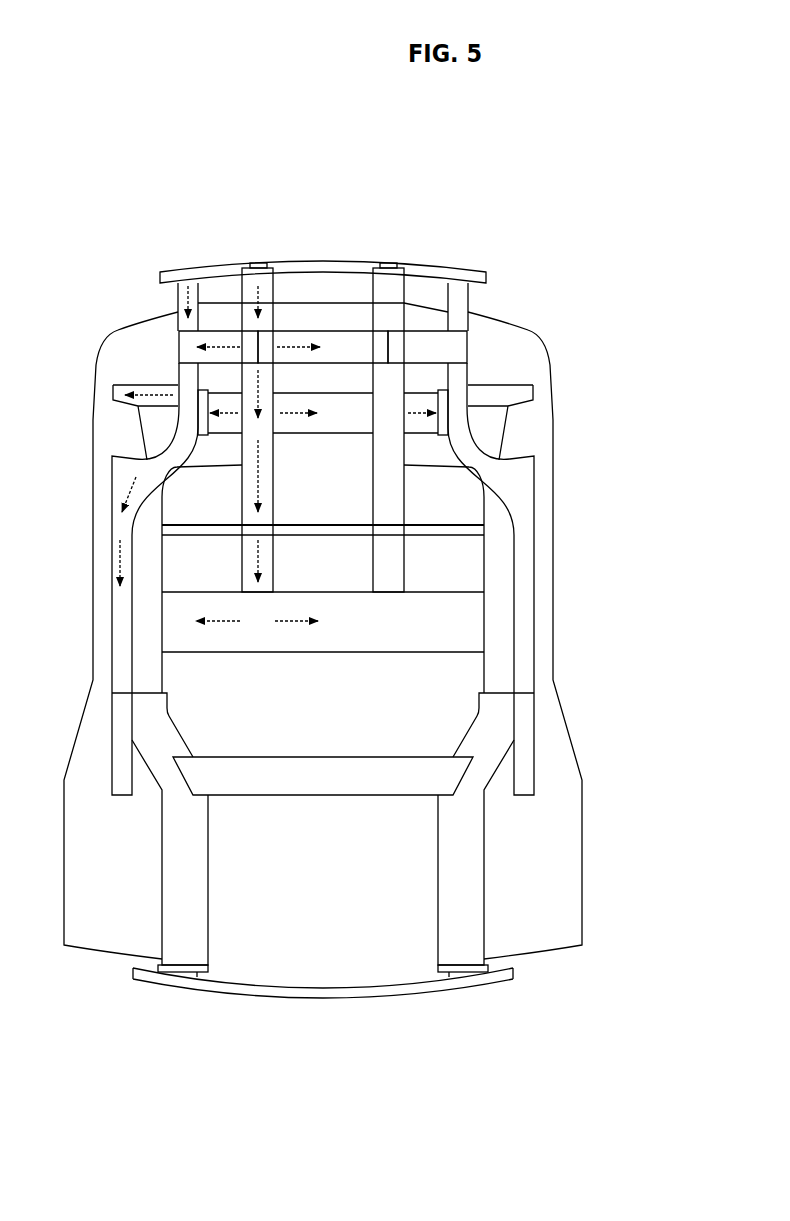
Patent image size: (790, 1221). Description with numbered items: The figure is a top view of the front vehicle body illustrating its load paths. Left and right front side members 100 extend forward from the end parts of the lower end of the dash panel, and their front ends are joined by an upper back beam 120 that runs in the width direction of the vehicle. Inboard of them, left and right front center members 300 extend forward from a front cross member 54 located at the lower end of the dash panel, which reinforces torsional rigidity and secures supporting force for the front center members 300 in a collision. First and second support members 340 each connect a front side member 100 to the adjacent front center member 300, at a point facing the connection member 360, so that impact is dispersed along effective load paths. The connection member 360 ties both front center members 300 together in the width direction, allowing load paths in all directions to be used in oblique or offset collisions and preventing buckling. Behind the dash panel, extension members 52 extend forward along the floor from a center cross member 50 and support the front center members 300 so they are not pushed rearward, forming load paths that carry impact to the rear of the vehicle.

The center cross member 50 is at (456, 627).
The extension member 52 is at (390, 495).
The front cross member 54 is at (423, 418).
The front side member 100 is at (457, 295).
The upper back beam 120 is at (327, 267).
The front center member 300 is at (387, 280).
The support member 340 is at (225, 343).
The connection member 360 is at (308, 343).